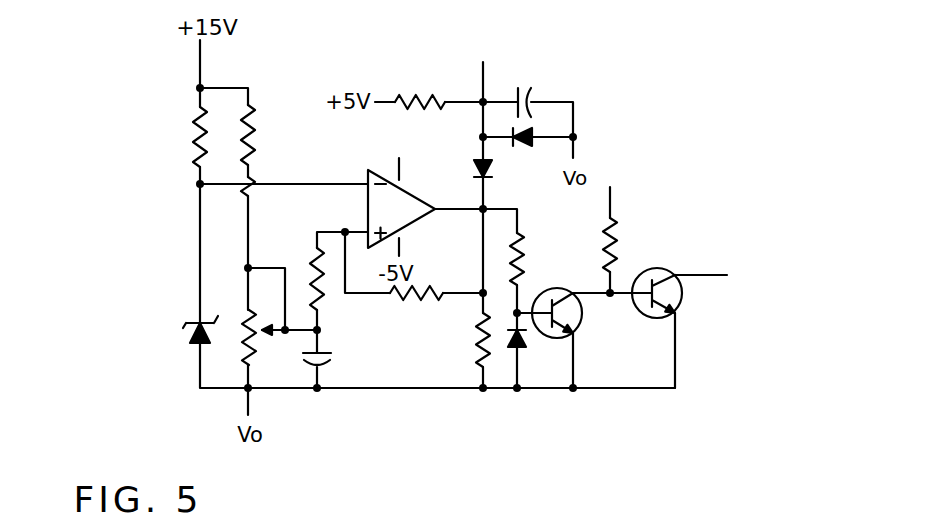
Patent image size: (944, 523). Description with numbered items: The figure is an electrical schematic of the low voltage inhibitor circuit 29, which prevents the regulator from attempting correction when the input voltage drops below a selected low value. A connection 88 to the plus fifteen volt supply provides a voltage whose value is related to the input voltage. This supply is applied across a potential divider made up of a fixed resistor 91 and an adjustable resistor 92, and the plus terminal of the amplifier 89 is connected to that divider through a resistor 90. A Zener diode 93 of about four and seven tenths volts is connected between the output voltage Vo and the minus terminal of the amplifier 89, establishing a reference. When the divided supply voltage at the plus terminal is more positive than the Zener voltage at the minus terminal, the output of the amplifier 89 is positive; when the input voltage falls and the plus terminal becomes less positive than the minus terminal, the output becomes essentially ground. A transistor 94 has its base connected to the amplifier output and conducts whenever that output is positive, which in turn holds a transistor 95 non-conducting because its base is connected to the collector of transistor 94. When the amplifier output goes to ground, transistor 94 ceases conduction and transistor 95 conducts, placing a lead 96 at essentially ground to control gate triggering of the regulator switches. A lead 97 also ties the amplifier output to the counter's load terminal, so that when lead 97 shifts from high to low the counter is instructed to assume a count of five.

The connection 88 is at (203, 62).
The fixed resistor 91 is at (253, 135).
The amplifier 89 is at (420, 193).
The lead 97 is at (482, 73).
The low voltage inhibitor circuit 29 is at (618, 162).
The resistor 90 is at (307, 295).
The adjustable resistor 92 is at (247, 315).
The Zener diode 93 is at (190, 338).
The transistor 94 is at (582, 315).
The transistor 95 is at (650, 265).
The lead 96 is at (713, 277).